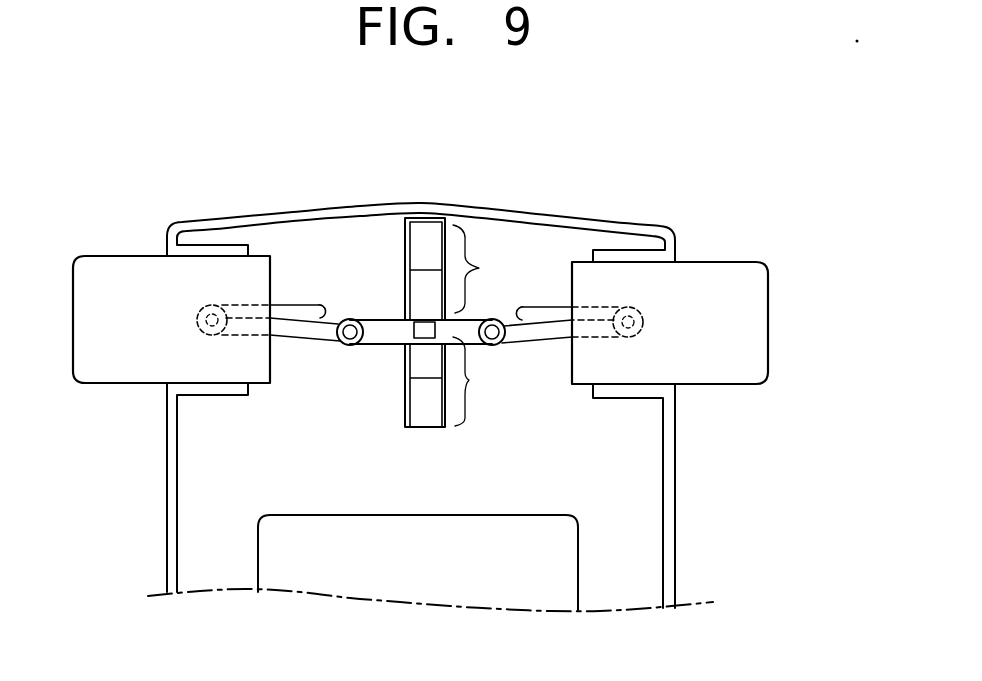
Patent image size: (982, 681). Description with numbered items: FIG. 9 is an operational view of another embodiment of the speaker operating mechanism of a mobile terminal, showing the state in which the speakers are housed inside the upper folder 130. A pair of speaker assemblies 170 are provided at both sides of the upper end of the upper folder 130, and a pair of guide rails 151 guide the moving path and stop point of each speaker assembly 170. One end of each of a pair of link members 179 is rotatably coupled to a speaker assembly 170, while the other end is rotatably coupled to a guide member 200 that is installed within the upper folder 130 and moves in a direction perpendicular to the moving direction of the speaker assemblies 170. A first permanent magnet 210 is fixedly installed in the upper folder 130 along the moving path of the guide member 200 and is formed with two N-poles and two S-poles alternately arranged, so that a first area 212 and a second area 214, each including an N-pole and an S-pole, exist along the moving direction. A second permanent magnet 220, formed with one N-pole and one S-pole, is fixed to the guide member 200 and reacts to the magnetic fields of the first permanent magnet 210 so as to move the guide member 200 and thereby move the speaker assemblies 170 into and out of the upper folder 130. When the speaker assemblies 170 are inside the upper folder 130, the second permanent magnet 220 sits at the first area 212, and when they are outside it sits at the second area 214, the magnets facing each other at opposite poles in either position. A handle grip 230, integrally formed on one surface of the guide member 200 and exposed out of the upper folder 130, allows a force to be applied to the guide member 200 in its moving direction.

The upper folder 130 is at (700, 515).
The guide rails 151 is at (283, 307).
The speaker assembly 170 is at (122, 272).
The link member 179 is at (305, 327).
The guide member 200 is at (383, 327).
The first permanent magnet 210 is at (403, 400).
The first area 212 is at (469, 380).
The second area 214 is at (479, 268).
The second permanent magnet 220 is at (402, 248).
The handle grip 230 is at (414, 338).